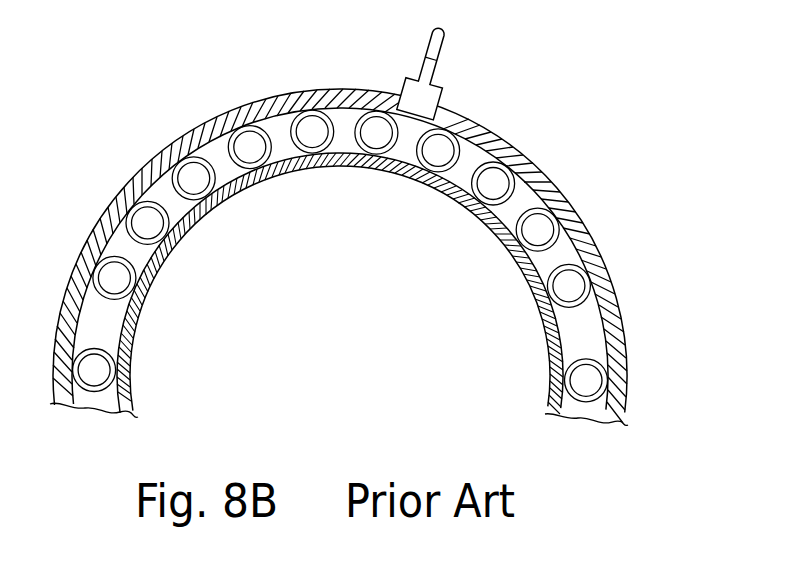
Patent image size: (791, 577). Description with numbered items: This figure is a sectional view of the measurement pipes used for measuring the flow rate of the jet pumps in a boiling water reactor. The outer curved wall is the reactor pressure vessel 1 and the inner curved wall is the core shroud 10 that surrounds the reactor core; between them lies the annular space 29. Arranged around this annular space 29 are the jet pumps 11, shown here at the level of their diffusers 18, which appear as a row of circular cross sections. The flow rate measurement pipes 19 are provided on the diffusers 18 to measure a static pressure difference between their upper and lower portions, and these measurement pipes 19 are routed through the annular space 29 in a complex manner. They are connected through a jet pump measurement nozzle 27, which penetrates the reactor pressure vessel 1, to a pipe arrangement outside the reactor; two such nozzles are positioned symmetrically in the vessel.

The reactor pressure vessel 1 is at (372, 257).
The core shroud 10 is at (340, 283).
The jet pumps 11 is at (510, 147).
The diffusers 18 is at (373, 256).
The flow rate measurement pipes 19 is at (183, 198).
The jet pump measurement nozzle 27 is at (441, 68).
The annular space 29 is at (582, 318).